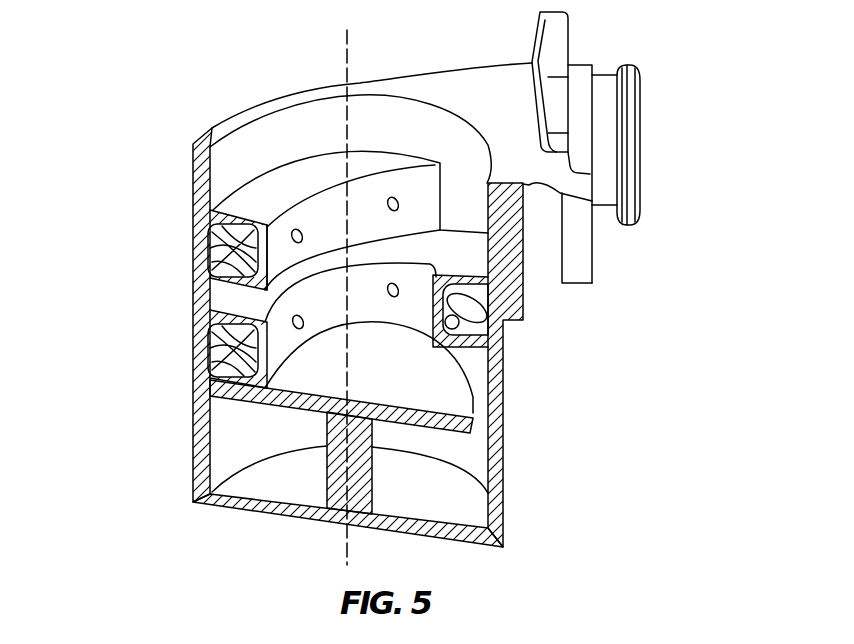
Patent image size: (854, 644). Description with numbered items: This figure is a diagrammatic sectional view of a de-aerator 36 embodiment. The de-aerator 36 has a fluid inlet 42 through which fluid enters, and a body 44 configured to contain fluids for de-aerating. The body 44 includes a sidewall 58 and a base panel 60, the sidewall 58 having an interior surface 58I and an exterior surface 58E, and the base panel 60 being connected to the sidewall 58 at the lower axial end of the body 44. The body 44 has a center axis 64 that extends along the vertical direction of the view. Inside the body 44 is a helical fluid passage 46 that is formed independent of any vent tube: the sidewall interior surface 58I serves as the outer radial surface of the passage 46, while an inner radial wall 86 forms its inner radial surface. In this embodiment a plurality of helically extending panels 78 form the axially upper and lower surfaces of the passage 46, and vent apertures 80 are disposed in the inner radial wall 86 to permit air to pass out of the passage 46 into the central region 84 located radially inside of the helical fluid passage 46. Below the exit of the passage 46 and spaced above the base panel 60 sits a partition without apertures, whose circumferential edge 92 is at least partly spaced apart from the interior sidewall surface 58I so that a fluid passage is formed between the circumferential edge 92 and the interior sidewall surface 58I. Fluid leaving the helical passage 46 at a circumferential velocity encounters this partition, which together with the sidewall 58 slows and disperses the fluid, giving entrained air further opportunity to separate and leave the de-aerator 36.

The de-aerator 36 is at (637, 165).
The fluid inlet 42 is at (650, 133).
The body 44 is at (580, 322).
The helical fluid passage 46 is at (427, 314).
The sidewall 58 is at (427, 311).
The sidewall interior surface 58I is at (223, 157).
The sidewall exterior surface 58E is at (193, 193).
The base panel 60 is at (450, 521).
The center axis 64 is at (348, 38).
The helically extending panel 78 is at (225, 264).
The vent apertures 80 is at (385, 205).
The central region 84 is at (360, 203).
The inner radial wall 86 is at (215, 232).
The circumferential edge 92 is at (503, 388).